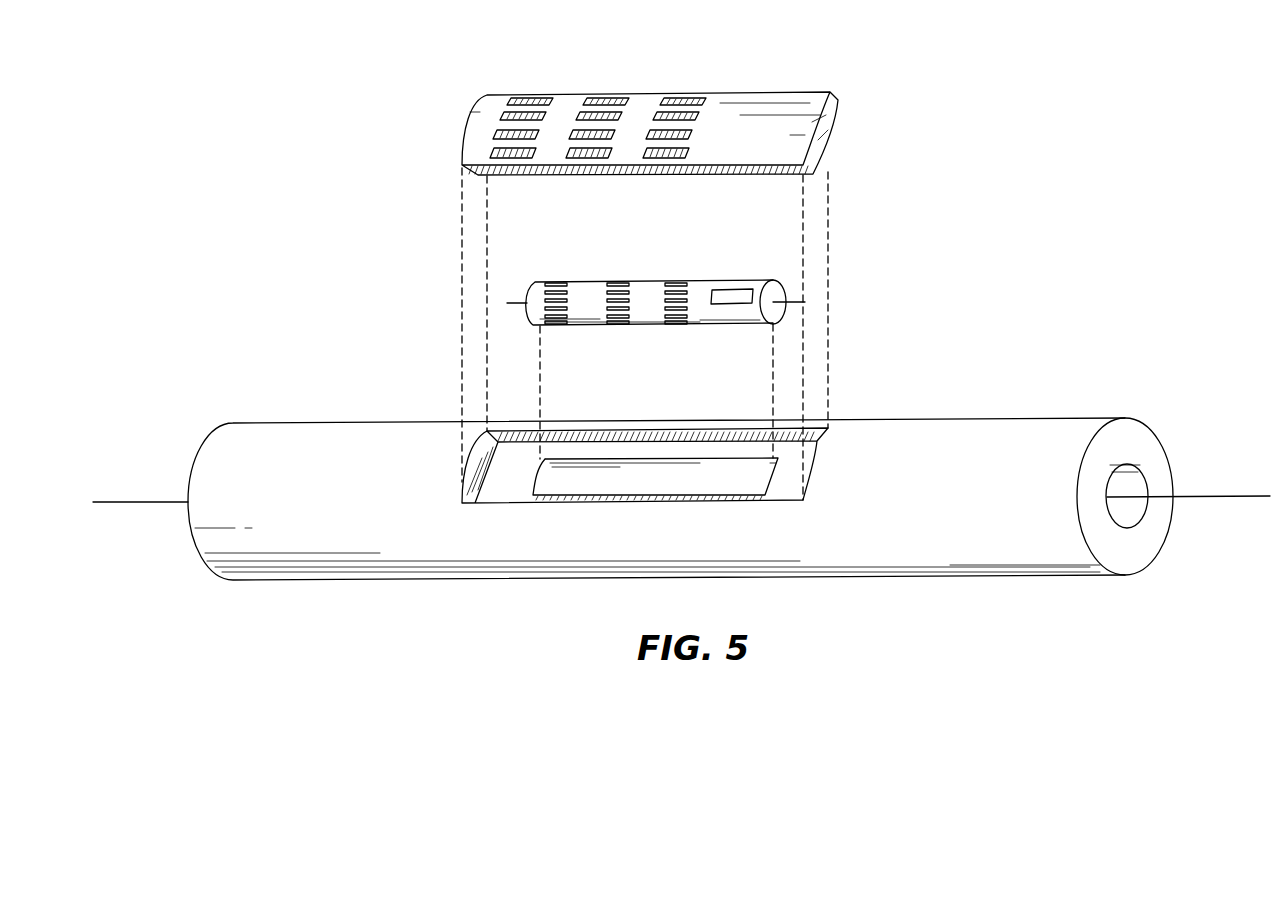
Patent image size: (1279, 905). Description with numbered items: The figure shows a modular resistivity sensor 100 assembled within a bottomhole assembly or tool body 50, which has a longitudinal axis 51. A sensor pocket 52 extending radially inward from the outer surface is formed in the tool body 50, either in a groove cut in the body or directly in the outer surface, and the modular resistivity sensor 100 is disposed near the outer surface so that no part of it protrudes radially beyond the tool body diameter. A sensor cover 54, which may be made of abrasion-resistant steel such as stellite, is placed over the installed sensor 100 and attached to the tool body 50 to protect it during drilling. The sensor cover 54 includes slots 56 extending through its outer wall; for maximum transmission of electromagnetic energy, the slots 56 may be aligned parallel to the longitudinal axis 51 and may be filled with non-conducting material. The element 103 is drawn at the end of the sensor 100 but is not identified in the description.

The tool body 50 is at (350, 423).
The longitudinal axis 51 is at (1212, 496).
The sensor pocket 52 is at (655, 470).
The sensor cover 54 is at (745, 103).
The slots 56 is at (605, 100).
The modular resistivity sensor 100 is at (655, 279).
The sensor lead wire 103 is at (790, 302).